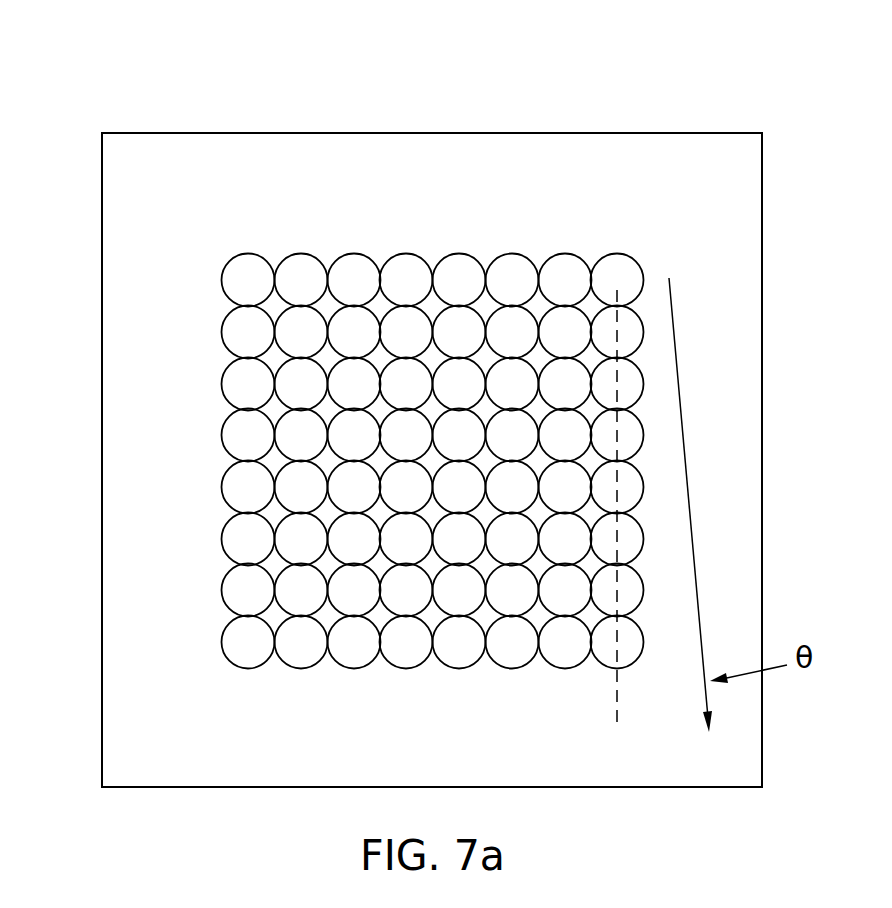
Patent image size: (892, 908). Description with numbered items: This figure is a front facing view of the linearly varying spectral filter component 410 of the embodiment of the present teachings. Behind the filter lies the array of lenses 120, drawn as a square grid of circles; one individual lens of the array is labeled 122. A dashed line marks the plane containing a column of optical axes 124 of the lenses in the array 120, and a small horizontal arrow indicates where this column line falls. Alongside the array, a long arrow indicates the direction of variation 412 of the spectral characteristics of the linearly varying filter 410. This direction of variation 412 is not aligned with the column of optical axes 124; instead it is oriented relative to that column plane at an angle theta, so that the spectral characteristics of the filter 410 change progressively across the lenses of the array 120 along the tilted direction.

The linearly varying spectral filter component 410 is at (158, 66).
The array of lenses 120 is at (207, 232).
The light-emitting element 122 is at (407, 278).
The column of optical axes 124 is at (560, 695).
The direction of variation 412 is at (704, 524).